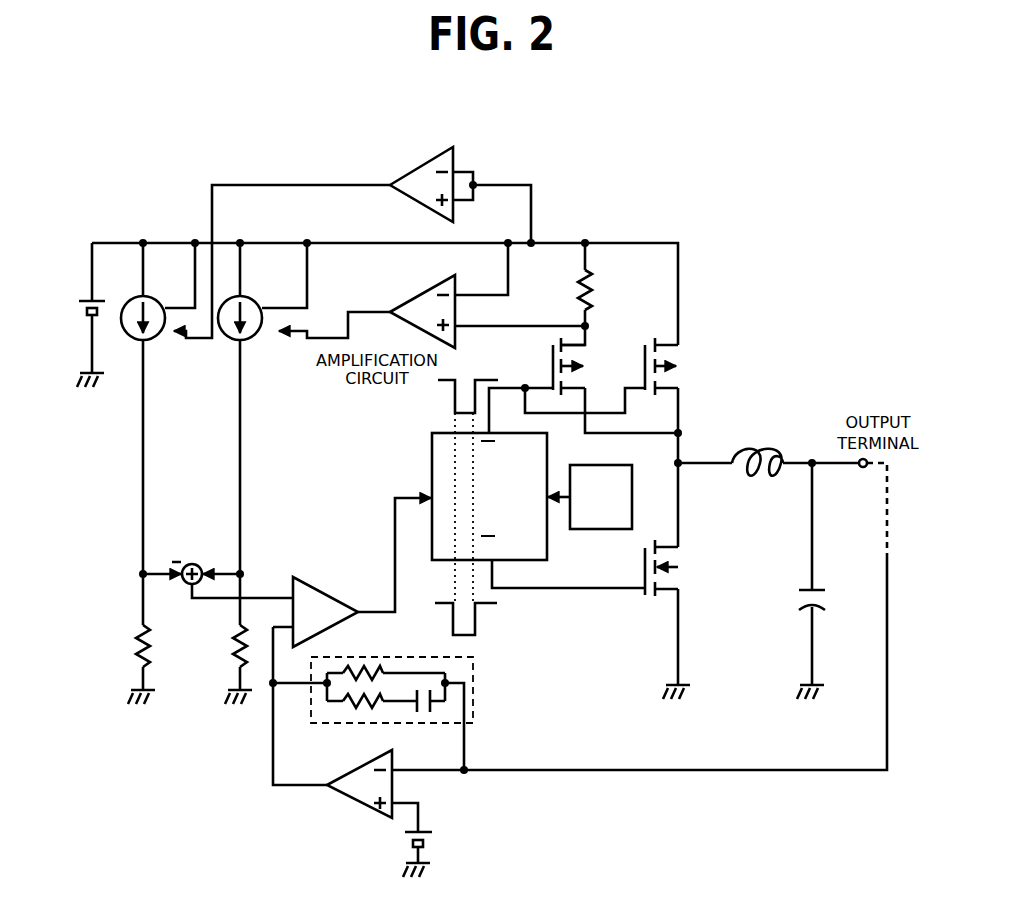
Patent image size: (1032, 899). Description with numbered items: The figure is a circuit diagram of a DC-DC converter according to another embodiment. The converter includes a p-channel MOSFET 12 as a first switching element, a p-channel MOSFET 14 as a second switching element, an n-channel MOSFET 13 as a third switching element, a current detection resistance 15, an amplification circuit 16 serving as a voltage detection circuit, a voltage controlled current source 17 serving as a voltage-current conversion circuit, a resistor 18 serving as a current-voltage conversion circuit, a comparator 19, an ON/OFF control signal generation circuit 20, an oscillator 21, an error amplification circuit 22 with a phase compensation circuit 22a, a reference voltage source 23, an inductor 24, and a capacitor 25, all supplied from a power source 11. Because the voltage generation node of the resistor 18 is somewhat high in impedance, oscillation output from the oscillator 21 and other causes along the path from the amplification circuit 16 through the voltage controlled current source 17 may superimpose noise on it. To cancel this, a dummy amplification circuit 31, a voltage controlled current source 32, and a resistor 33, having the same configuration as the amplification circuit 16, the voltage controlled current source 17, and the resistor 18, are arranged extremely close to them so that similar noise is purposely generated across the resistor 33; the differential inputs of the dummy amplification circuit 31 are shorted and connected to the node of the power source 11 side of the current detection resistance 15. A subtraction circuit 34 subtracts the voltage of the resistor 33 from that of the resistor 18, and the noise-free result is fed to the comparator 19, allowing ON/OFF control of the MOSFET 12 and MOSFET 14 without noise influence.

The power source 11 is at (88, 294).
The p-channel MOSFET 12 is at (648, 340).
The n-channel MOSFET 13 is at (645, 560).
The p-channel MOSFET 14 is at (547, 366).
The current detection resistance 15 is at (578, 280).
The amplification circuit 16 is at (400, 302).
The voltage controlled current source 17 is at (245, 342).
The resistor 18 is at (235, 650).
The comparator 19 is at (318, 590).
The ON/OFF control signal generation circuit 20 is at (432, 452).
The oscillator 21 is at (582, 463).
The error amplification circuit 22 is at (380, 752).
The phase compensation circuit 22a is at (477, 690).
The reference voltage source 23 is at (428, 840).
The inductor 24 is at (757, 452).
The capacitor 25 is at (800, 588).
The dummy amplification circuit 31 is at (394, 176).
The voltage controlled current source 32 is at (160, 340).
The resistor 33 is at (136, 650).
The subtraction circuit 34 is at (196, 562).